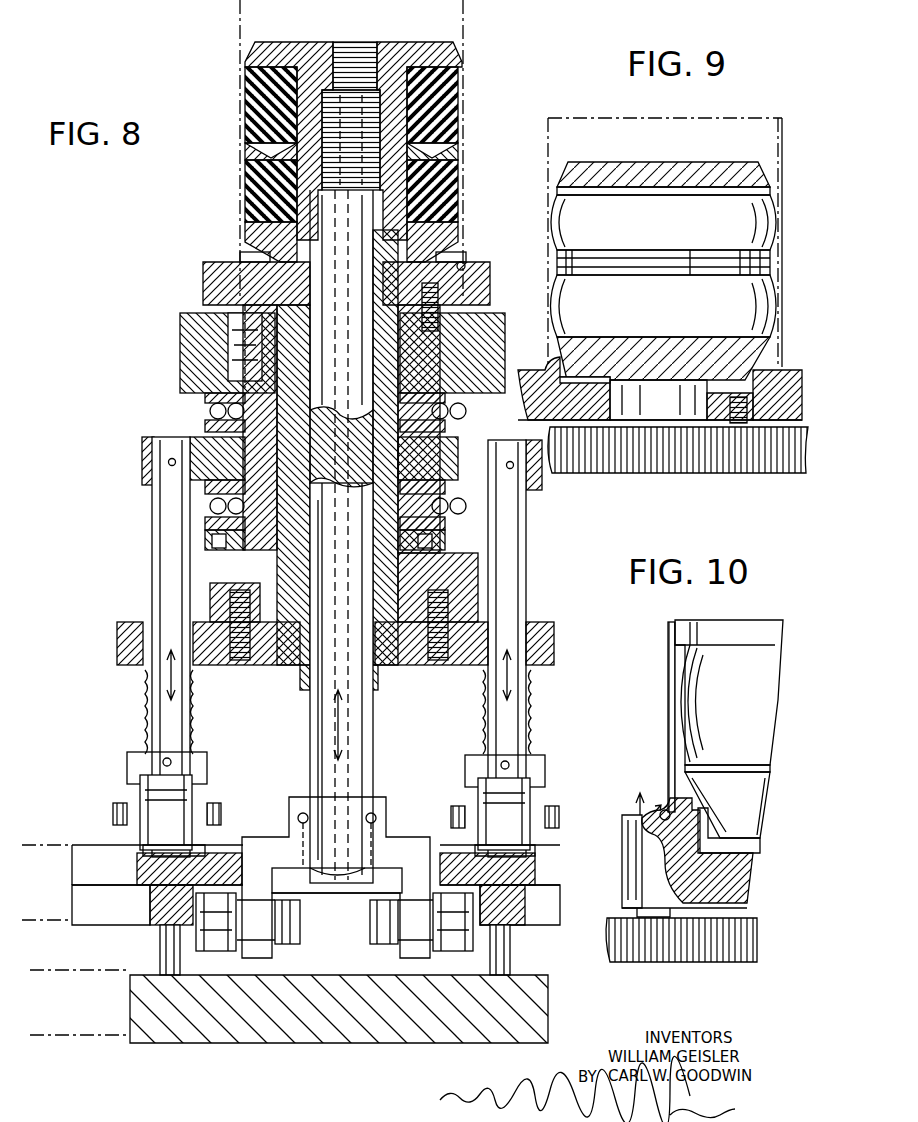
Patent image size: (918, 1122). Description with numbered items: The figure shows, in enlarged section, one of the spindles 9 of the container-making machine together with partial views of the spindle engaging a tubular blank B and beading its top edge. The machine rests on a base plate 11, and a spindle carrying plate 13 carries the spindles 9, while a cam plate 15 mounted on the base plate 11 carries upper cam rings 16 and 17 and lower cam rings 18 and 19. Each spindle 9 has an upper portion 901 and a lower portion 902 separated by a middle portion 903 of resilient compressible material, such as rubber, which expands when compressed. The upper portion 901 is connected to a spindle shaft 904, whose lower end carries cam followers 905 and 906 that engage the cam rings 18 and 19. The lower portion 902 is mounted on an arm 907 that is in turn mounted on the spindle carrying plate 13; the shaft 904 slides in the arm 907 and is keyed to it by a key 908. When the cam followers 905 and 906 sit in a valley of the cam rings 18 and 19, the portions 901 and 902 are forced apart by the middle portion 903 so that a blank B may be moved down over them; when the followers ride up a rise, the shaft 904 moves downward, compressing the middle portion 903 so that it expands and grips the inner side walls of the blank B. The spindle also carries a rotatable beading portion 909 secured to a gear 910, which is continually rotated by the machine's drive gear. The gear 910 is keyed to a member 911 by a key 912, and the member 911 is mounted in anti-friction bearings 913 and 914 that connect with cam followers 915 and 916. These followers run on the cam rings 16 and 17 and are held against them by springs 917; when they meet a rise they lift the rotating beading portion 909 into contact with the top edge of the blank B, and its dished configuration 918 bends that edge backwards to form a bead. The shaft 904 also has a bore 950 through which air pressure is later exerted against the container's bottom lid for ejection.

In FIG. 8, the spindle 9 is at (200, 207).
In FIG. 8, the base plate 11 is at (190, 1022).
In FIG. 8, the spindle carrying plate 13 is at (556, 642).
In FIG. 8, the cam plate 15 is at (54, 890).
In FIG. 8, the upper cam ring 16 is at (135, 855).
In FIG. 8, the upper cam ring 17 is at (535, 858).
In FIG. 8, the lower cam ring 18 is at (150, 901).
In FIG. 8, the lower cam ring 19 is at (522, 905).
In FIG. 8, the upper portion 901 is at (252, 60).
In FIG. 9, the upper portion 901 is at (655, 173).
In FIG. 8, the lower portion 902 is at (268, 237).
In FIG. 9, the lower portion 902 is at (670, 369).
In FIG. 10, the lower portion 902 is at (755, 803).
In FIG. 8, the middle portion 903 is at (250, 101).
In FIG. 9, the middle portion 903 is at (680, 222).
In FIG. 10, the middle portion 903 is at (745, 715).
In FIG. 8, the spindle shaft 904 is at (320, 736).
In FIG. 8, the cam follower 905 is at (210, 945).
In FIG. 8, the cam follower 906 is at (455, 950).
In FIG. 8, the arm 907 is at (284, 657).
In FIG. 8, the key 908 is at (302, 680).
In FIG. 8, the beading portion 909 is at (218, 287).
In FIG. 9, the beading portion 909 is at (520, 378).
In FIG. 10, the beading portion 909 is at (637, 877).
In FIG. 8, the gear 910 is at (200, 353).
In FIG. 9, the gear 910 is at (712, 463).
In FIG. 10, the gear 910 is at (640, 945).
In FIG. 8, the member 911 is at (250, 545).
In FIG. 8, the key 912 is at (235, 358).
In FIG. 8, the anti-friction bearing 913 is at (216, 412).
In FIG. 8, the anti-friction bearing 914 is at (466, 507).
In FIG. 8, the cam follower 915 is at (165, 529).
In FIG. 8, the cam follower 916 is at (510, 595).
In FIG. 8, the spring 917 is at (146, 713).
In FIG. 8, the dished configuration 918 is at (463, 264).
In FIG. 9, the dished configuration 918 is at (760, 378).
In FIG. 10, the dished configuration 918 is at (662, 808).
In FIG. 8, the bore 950 is at (326, 478).
In FIG. 8, the blank B is at (476, 36).
In FIG. 9, the blank B is at (539, 155).
In FIG. 10, the blank B is at (659, 655).